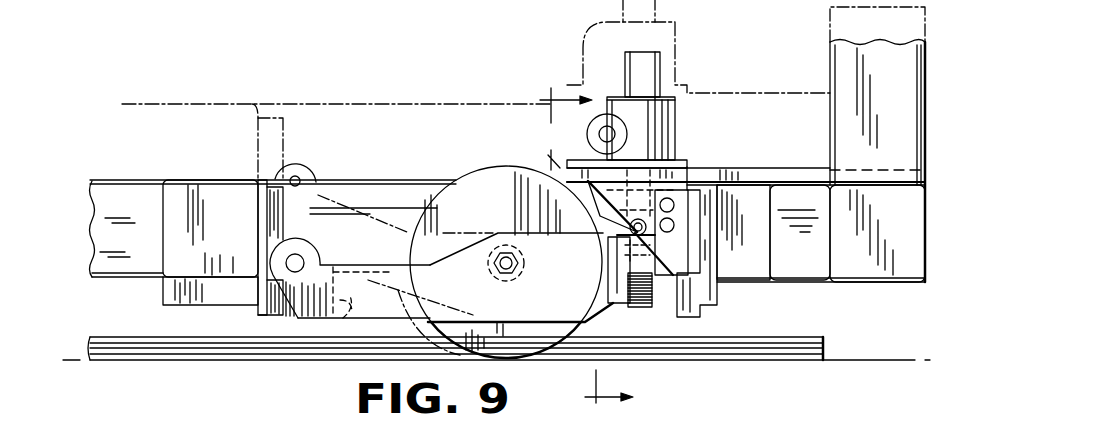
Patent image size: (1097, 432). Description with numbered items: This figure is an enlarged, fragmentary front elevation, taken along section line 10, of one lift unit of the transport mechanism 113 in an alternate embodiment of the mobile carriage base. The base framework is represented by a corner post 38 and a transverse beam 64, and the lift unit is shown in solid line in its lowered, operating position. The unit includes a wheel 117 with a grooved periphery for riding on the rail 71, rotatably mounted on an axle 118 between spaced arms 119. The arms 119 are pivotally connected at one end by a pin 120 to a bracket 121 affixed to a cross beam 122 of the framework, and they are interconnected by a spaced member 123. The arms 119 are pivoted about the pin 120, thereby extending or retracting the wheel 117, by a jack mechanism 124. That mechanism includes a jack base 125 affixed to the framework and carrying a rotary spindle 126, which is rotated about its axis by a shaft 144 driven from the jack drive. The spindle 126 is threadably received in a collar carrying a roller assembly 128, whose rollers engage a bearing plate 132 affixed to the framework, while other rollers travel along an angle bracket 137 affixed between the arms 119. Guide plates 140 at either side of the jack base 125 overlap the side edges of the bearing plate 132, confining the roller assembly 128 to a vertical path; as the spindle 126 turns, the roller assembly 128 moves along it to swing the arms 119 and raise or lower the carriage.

The section line 10- 10 is at (575, 248).
The corner post 38 is at (845, 72).
The transverse beam 64 is at (118, 196).
The rail 71 is at (157, 348).
The transport mechanism 113 is at (380, 84).
The wheel 117 is at (470, 197).
The axle 118 is at (497, 268).
The spaced arms 119 is at (325, 283).
The pin 120 is at (288, 260).
The bracket 121 is at (165, 288).
The cross beam 122 is at (187, 197).
The spaced member 123 is at (348, 322).
The jack mechanism 124 is at (689, 112).
The jack base 125 is at (666, 138).
The rotary spindle 126 is at (640, 307).
The roller assembly 128 is at (609, 225).
The bearing plate 132 is at (697, 308).
The angle bracket 137 is at (618, 268).
The guide plate 140 is at (672, 247).
The shaft 144 is at (598, 134).